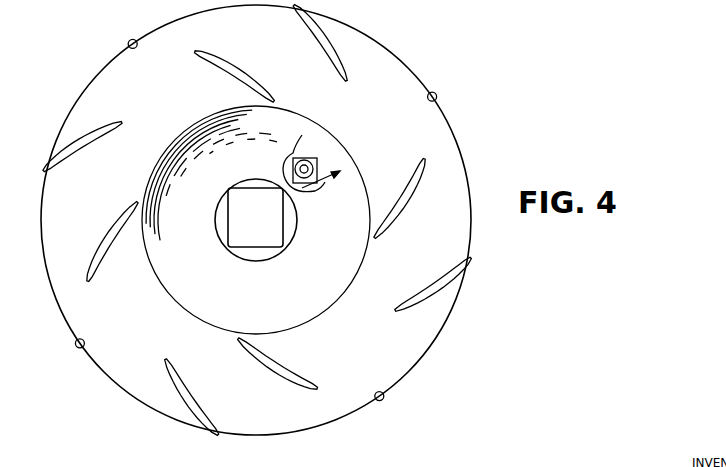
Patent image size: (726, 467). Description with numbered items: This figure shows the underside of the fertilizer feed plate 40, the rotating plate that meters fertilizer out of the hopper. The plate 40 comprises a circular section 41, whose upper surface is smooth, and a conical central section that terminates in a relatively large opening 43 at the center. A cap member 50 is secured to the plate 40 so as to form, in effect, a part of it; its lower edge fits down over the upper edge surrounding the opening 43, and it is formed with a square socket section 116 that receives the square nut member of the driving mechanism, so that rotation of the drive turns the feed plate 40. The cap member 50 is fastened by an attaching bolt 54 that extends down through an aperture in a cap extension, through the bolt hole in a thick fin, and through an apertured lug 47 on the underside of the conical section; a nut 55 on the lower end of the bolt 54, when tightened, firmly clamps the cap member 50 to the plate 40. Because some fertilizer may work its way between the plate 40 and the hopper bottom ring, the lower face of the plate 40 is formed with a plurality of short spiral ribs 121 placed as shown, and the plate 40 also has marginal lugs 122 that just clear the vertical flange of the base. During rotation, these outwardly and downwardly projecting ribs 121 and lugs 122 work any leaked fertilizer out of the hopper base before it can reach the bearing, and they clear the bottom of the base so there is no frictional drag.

The fertilizer feed plate 40 is at (416, 66).
The circular section 41 is at (433, 138).
The opening 43 is at (262, 261).
The apertured lug 47 is at (307, 185).
The cap member 50 is at (216, 222).
The attaching bolt 54 is at (297, 152).
The nut 55 is at (300, 171).
The square socket section 116 is at (283, 232).
The spiral ribs 121 is at (417, 302).
The marginal lugs 122 is at (131, 39).